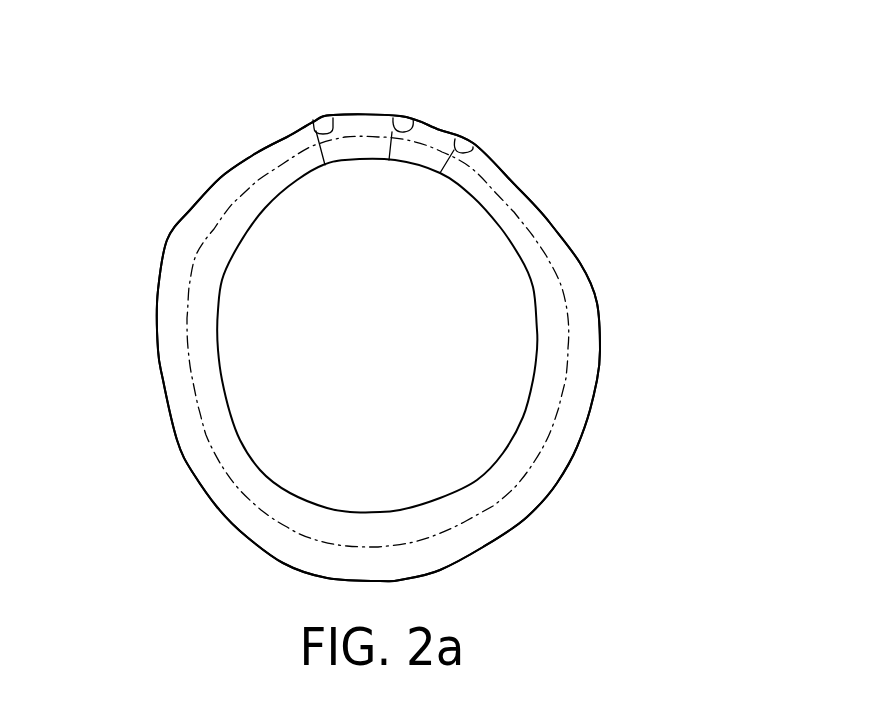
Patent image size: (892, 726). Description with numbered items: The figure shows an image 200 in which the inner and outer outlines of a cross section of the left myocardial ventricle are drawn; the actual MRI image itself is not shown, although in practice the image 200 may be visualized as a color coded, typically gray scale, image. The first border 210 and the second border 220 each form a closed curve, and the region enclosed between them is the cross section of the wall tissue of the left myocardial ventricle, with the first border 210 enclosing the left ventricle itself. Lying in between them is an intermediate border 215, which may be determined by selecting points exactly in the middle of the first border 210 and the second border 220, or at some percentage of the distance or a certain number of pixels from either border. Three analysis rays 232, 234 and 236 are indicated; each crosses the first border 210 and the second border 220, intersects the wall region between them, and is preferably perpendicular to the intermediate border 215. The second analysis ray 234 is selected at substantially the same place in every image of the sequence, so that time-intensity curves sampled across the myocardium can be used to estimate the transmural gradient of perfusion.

The image 200 is at (628, 105).
The first border 210 is at (218, 372).
The intermediate border 215 is at (197, 410).
The second border 220 is at (182, 450).
The analysis ray 232 is at (473, 140).
The second analysis ray 234 is at (411, 120).
The analysis ray 236 is at (332, 118).